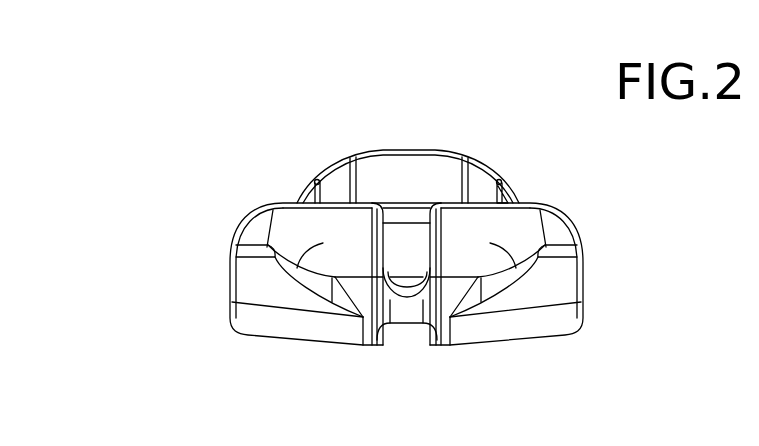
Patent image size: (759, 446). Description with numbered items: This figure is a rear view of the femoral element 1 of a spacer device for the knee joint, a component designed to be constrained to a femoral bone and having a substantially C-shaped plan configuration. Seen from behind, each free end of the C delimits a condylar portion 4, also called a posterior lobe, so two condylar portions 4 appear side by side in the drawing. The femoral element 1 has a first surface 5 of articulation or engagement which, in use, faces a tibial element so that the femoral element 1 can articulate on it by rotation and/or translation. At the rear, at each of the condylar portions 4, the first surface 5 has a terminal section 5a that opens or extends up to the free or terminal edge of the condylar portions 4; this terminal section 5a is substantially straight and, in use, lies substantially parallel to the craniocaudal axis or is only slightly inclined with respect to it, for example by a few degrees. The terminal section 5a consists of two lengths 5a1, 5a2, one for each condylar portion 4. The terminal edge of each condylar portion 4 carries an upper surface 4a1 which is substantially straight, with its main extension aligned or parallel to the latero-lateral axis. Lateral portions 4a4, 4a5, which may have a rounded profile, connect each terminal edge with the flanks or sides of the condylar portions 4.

The femoral element 1 is at (175, 122).
The condylar portion 4 is at (253, 237).
The upper surface 4a1 is at (512, 194).
The lateral portion 4a4 is at (568, 218).
The lateral portion 4a5 is at (247, 227).
The first surface 5 is at (353, 347).
The terminal section 5a is at (462, 228).
The length 5a1 is at (300, 268).
The length 5a2 is at (513, 265).